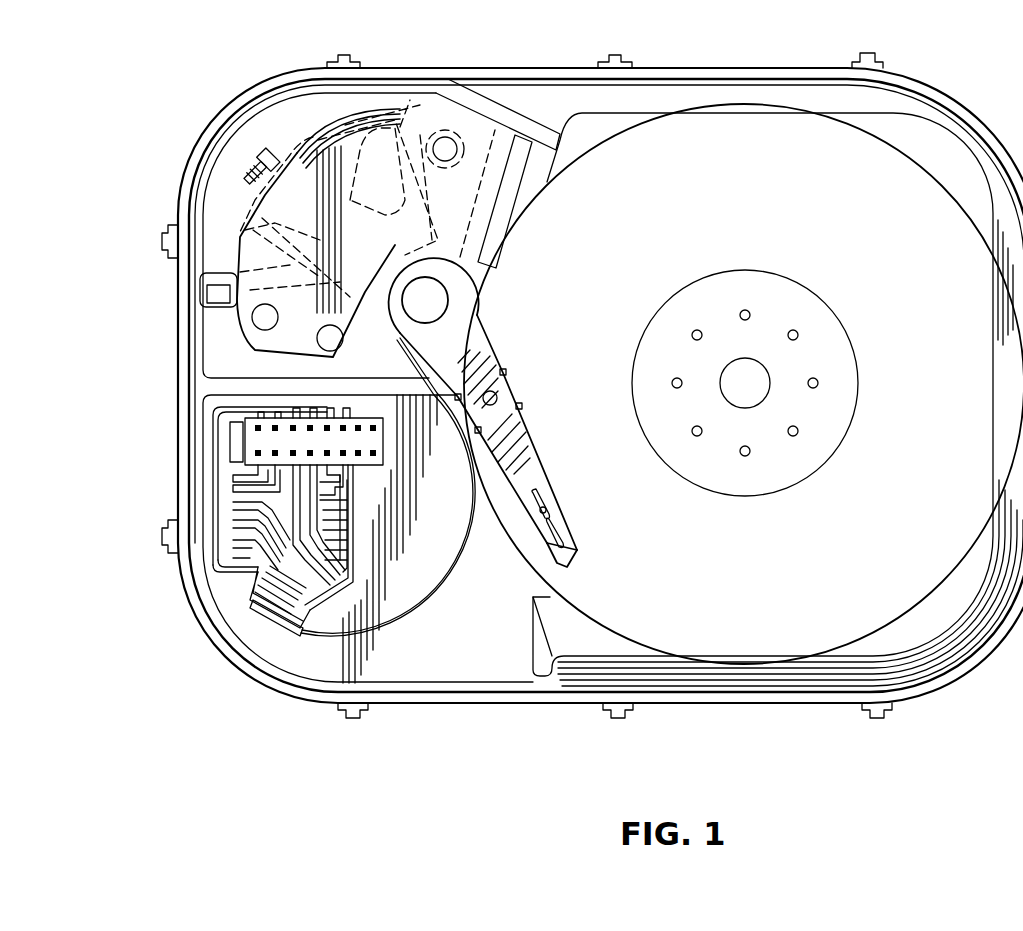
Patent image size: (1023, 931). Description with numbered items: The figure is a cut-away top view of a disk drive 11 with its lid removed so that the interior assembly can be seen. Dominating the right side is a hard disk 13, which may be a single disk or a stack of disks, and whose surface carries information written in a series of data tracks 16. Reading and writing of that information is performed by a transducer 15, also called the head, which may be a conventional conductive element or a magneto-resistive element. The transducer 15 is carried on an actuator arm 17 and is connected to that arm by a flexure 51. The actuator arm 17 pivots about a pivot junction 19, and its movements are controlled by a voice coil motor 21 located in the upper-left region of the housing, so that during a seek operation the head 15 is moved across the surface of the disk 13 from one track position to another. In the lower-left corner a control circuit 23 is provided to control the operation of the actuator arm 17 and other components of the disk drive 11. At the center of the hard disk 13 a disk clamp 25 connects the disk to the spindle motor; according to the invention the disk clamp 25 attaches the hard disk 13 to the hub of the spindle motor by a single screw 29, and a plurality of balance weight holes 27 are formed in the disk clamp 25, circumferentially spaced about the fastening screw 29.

The disk drive 11 is at (783, 68).
The hard disk 13 is at (752, 133).
The transducer 15 is at (547, 560).
The data tracks 16 is at (700, 650).
The actuator arm 17 is at (460, 343).
The pivot junction 19 is at (433, 290).
The voice coil motor 21 is at (310, 137).
The control circuit 23 is at (215, 476).
The disk clamp 25 is at (777, 307).
The balance weight holes 27 is at (819, 382).
The screw 29 is at (750, 378).
The flexure 51 is at (537, 477).